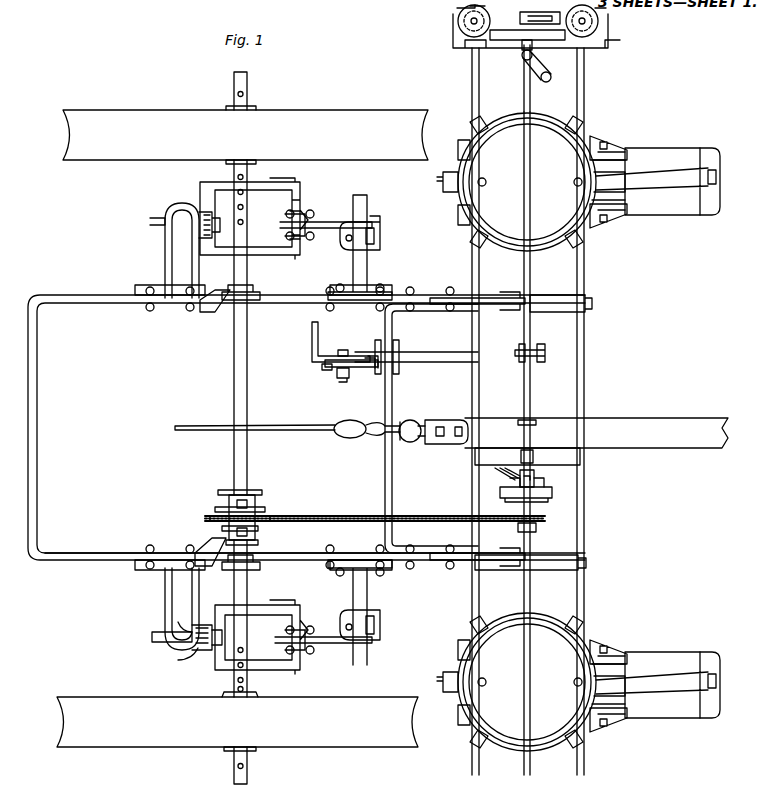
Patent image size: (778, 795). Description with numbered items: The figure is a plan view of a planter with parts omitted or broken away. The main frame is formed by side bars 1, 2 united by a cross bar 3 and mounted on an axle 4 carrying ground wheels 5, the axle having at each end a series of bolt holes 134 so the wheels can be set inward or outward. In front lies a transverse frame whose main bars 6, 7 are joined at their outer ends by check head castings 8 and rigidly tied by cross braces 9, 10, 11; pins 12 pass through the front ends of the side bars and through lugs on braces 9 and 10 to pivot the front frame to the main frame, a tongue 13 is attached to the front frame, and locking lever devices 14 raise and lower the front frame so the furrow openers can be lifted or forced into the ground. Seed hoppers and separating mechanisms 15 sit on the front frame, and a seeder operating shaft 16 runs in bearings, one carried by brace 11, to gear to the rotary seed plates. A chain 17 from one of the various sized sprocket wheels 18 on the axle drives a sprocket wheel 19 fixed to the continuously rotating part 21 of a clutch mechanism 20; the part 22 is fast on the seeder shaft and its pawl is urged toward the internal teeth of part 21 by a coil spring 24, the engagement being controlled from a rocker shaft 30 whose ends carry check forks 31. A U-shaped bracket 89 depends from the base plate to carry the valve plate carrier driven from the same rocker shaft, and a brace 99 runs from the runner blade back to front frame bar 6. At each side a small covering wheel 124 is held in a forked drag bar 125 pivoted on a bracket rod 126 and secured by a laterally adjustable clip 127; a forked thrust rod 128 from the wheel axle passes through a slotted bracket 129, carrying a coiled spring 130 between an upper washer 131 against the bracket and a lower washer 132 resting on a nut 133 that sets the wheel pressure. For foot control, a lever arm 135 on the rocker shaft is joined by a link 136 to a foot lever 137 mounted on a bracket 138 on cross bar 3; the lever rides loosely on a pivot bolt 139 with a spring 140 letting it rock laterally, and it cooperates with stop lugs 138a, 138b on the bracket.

The side bar 1 is at (128, 305).
The side bar 2 is at (118, 560).
The cross bar 3 is at (388, 490).
The axle 4 is at (250, 473).
The ground wheel 5 is at (147, 158).
The main bar 6 is at (584, 388).
The main bar 7 is at (472, 390).
The check head casting 8 is at (512, 48).
The cross brace 9 is at (545, 305).
The cross brace 10 is at (572, 555).
The cross brace 11 is at (562, 428).
The pin 12 is at (522, 295).
The tongue 13 is at (662, 425).
The locking lever devices 14 is at (372, 436).
The seed container and separating mechanism 15 is at (548, 248).
The seeder operating shaft 16 is at (530, 400).
The chain 17 is at (308, 516).
The sprocket wheel 18 is at (222, 528).
The sprocket wheel 19 is at (538, 527).
The clutch mechanism 20 is at (510, 490).
The continuously rotating clutch part 21 is at (540, 495).
The intermittently moving clutch part 22 is at (532, 476).
The coil spring 24 is at (505, 472).
The rocker shaft 30 is at (524, 95).
The check fork 31 is at (548, 48).
The U-shaped bracket 89 is at (605, 140).
The brace 99 is at (660, 192).
The covering wheel 124 is at (275, 205).
The forked drag bar 125 is at (332, 222).
The bracket rod 126 is at (367, 272).
The clip 127 is at (380, 238).
The forked thrust rod 128 is at (152, 638).
The slotted bracket 129 is at (165, 600).
The coiled spring 130 is at (186, 660).
The upper washer 131 is at (178, 622).
The lower washer 132 is at (198, 622).
The nut 133 is at (215, 625).
The bolt hole 134 is at (234, 171).
The lever arm 135 is at (540, 348).
The link 136 is at (420, 352).
The foot lever 137 is at (312, 346).
The bracket 138 is at (361, 368).
The stop lug 138a is at (322, 368).
The stop lug 138b is at (380, 362).
The pivot bolt 139 is at (344, 350).
The spring 140 is at (337, 374).